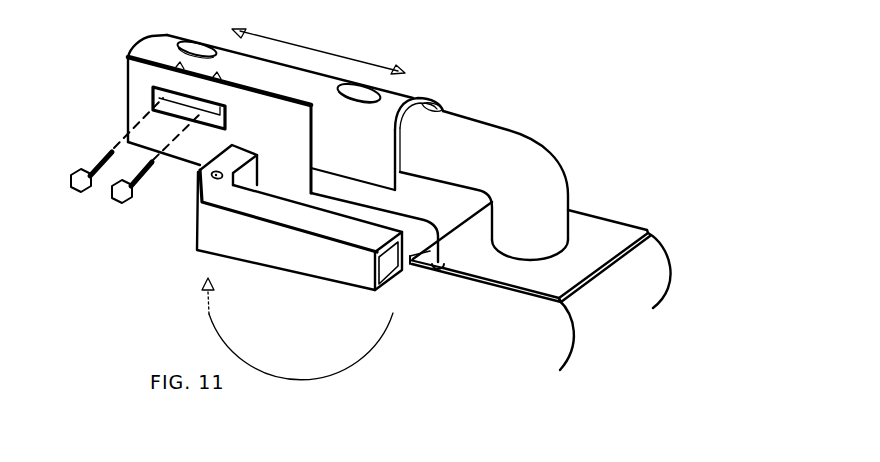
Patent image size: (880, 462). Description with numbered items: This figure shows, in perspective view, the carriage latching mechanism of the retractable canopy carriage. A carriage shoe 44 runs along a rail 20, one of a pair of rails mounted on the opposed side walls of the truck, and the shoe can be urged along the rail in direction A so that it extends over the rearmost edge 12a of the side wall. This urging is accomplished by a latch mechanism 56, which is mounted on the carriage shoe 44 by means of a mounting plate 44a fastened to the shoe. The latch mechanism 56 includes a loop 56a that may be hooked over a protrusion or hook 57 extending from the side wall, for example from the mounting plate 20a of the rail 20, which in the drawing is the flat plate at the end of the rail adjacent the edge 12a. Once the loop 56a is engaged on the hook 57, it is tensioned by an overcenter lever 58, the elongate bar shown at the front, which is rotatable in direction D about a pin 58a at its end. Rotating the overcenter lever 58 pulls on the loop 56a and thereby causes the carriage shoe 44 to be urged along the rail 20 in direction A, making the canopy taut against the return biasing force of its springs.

The carriage shoe 44 is at (413, 97).
The mounting plate 44a is at (137, 97).
The rail 20 is at (557, 163).
The mounting plate of rail 20a is at (602, 232).
The hook 57 is at (443, 251).
The loop 56a is at (415, 273).
The rearmost edge 12a is at (617, 287).
The overcenter lever 58 is at (343, 287).
The pin 58a is at (213, 175).
The latch mechanism 56 is at (205, 311).